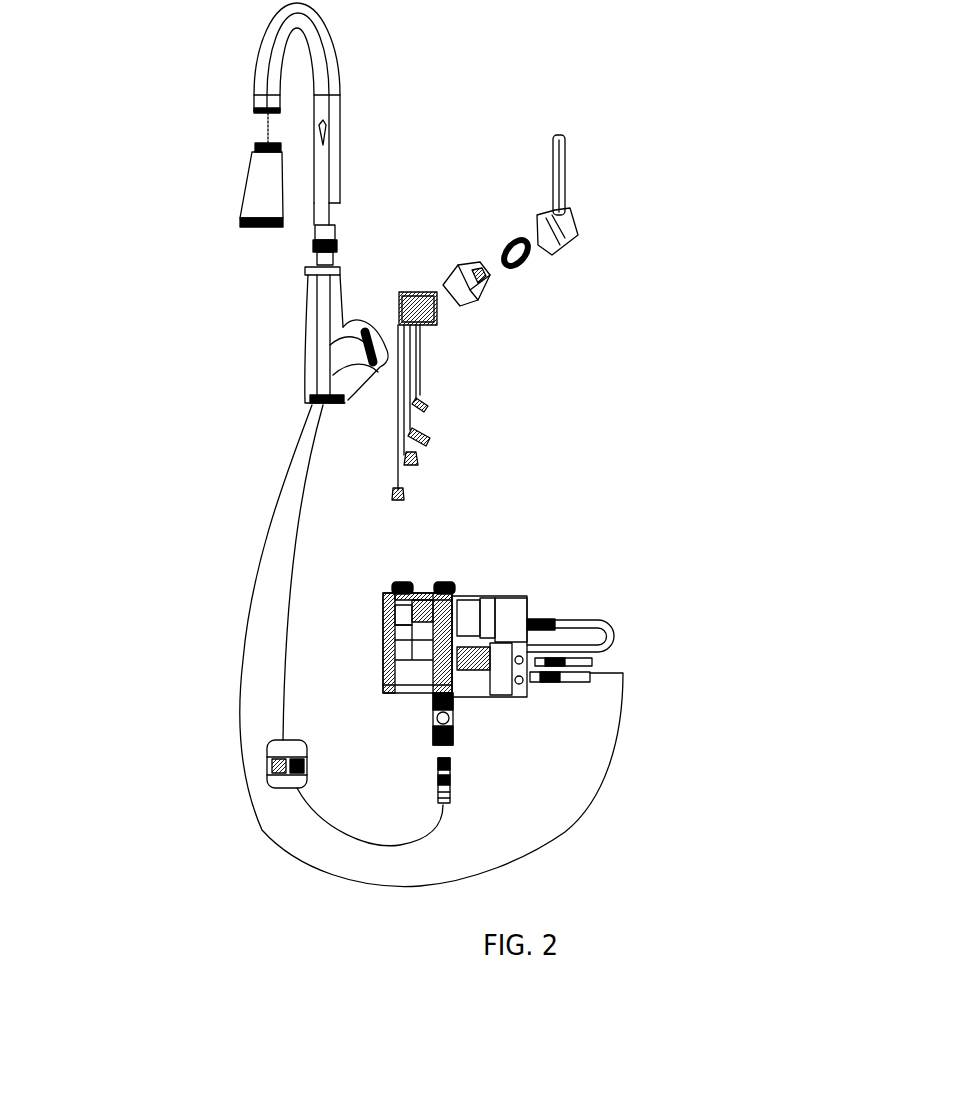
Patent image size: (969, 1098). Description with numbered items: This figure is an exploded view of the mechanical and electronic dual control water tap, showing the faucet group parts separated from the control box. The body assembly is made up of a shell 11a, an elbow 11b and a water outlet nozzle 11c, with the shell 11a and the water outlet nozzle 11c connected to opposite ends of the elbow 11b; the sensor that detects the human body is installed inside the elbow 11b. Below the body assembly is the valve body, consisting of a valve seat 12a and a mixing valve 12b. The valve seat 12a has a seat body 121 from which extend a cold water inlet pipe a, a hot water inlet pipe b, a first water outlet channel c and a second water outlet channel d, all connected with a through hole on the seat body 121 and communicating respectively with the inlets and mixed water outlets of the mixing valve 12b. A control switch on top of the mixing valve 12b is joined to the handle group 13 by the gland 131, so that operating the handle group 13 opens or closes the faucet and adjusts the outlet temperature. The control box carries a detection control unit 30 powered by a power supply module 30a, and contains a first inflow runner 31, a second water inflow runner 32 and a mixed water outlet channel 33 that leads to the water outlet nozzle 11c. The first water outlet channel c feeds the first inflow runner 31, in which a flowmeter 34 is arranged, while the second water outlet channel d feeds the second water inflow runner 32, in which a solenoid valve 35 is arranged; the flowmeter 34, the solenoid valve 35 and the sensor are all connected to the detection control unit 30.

The shell 11a is at (304, 337).
The elbow 11b is at (338, 82).
The water outlet nozzle 11c is at (260, 190).
The valve seat 12a is at (425, 320).
The mixing valve 12b is at (473, 300).
The seat body 121 is at (457, 357).
The handle group 13 is at (580, 227).
The gland 131 is at (528, 265).
The cold water inlet pipe a is at (407, 397).
The hot water inlet pipe b is at (415, 425).
The first water outlet channel c is at (410, 460).
The second water outlet channel d is at (400, 492).
The detection control unit 30 is at (476, 641).
The power supply module 30a is at (500, 608).
The first inflow runner 31 is at (398, 585).
The second water inflow runner 32 is at (443, 600).
The mixed water outlet channel 33 is at (453, 752).
The flowmeter 34 is at (390, 613).
The solenoid valve 35 is at (425, 688).